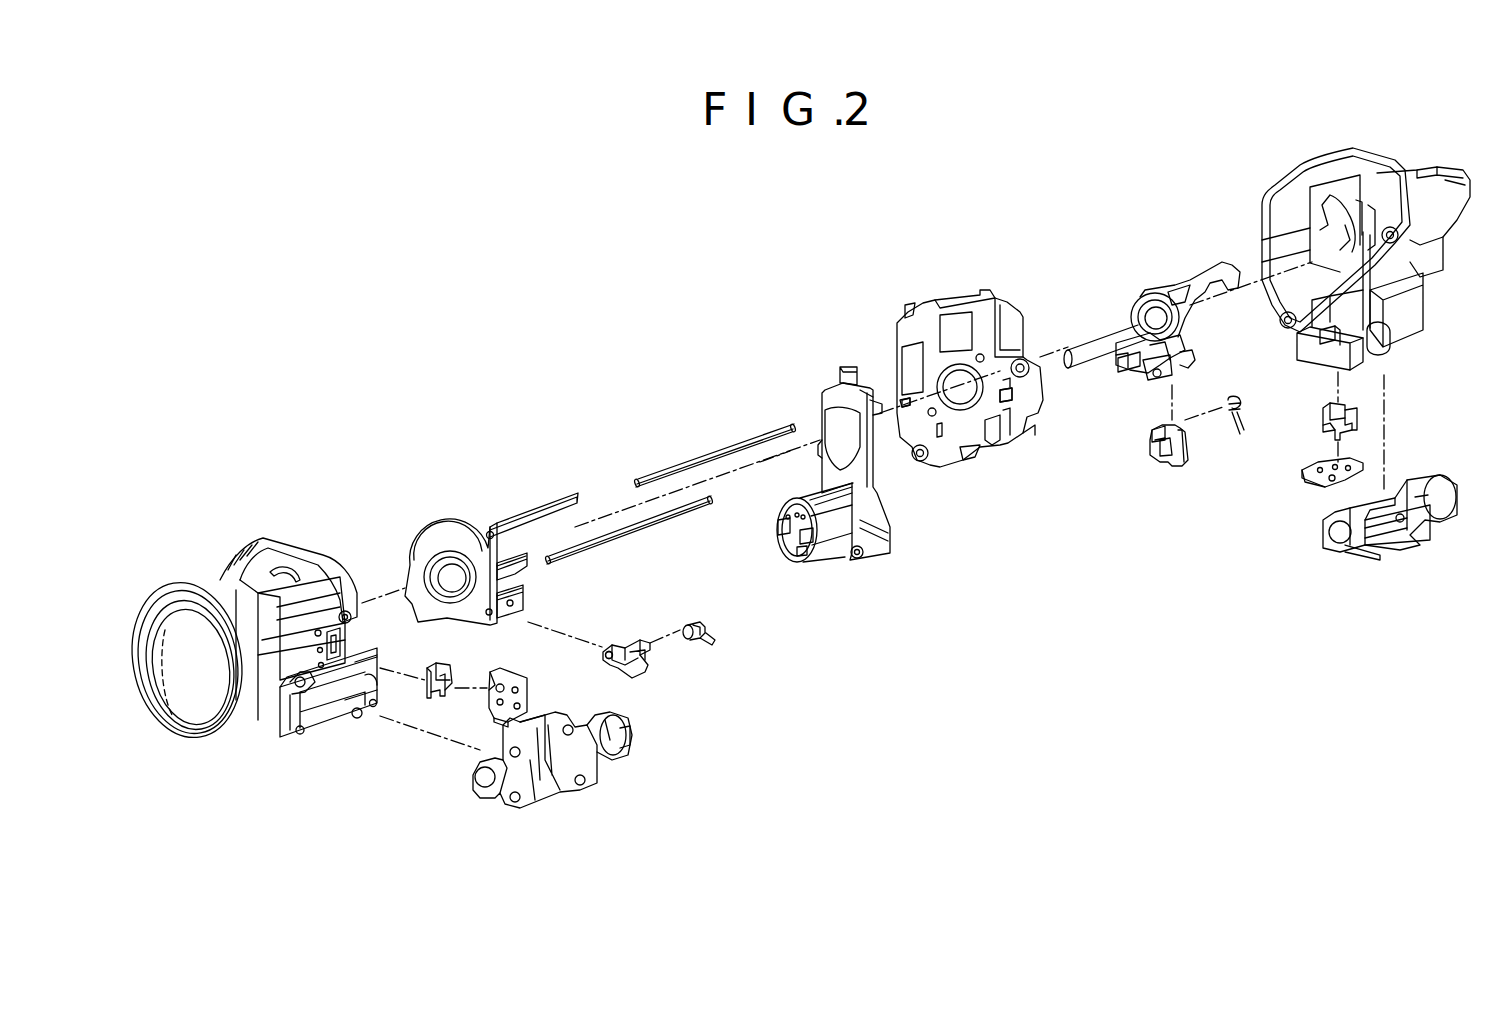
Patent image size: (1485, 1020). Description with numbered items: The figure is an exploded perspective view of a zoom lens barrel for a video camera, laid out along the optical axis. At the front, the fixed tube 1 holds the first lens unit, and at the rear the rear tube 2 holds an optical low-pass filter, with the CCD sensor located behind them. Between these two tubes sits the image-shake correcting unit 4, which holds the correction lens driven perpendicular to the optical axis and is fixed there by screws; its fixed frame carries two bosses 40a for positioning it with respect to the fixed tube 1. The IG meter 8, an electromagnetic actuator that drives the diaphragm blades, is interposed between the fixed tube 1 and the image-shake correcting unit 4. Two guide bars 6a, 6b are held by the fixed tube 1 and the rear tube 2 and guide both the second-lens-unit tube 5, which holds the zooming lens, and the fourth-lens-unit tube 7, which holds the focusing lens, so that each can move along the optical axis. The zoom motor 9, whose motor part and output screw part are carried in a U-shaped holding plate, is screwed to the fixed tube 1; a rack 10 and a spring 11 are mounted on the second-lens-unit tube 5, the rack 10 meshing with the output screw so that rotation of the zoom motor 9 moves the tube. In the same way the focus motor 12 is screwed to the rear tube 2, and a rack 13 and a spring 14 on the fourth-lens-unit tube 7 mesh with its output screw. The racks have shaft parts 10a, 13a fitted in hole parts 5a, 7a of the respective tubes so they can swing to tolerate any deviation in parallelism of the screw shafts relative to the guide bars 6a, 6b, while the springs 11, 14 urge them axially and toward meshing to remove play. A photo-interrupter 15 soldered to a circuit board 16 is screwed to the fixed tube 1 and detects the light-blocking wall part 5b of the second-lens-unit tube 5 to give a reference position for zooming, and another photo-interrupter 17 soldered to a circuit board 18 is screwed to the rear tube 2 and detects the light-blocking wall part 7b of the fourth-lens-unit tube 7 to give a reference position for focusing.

The fixed tube 1 is at (300, 540).
The rear tube 2 is at (1330, 153).
The image-shake correcting unit 4 is at (922, 302).
The second-lens-unit tube 5 is at (455, 520).
The hole part 5a is at (487, 620).
The light-blocking wall part 5b is at (527, 573).
The guide bar 6a is at (625, 525).
The guide bar 6b is at (712, 450).
The fourth-lens-unit tube 7 is at (1140, 288).
The hole part 7a is at (1151, 383).
The light-blocking wall part 7b is at (1122, 378).
The IG meter 8 is at (836, 578).
The zoom motor 9 is at (547, 790).
The rack 10 is at (630, 664).
The shaft part 10a is at (610, 658).
The spring 11 is at (694, 637).
The focus motor 12 is at (1348, 550).
The rack 13 is at (1180, 460).
The shaft part 13a is at (1153, 447).
The spring 14 is at (1233, 440).
The photo-interrupter 15 is at (430, 690).
The circuit board 16 is at (483, 697).
The photo-interrupter 17 is at (1327, 420).
The circuit board 18 is at (1313, 485).
The bosses 40a is at (903, 407).